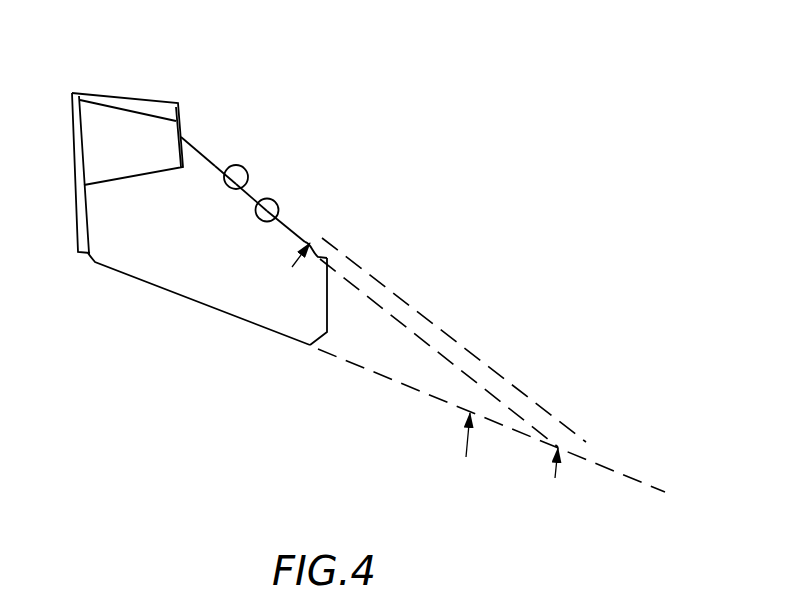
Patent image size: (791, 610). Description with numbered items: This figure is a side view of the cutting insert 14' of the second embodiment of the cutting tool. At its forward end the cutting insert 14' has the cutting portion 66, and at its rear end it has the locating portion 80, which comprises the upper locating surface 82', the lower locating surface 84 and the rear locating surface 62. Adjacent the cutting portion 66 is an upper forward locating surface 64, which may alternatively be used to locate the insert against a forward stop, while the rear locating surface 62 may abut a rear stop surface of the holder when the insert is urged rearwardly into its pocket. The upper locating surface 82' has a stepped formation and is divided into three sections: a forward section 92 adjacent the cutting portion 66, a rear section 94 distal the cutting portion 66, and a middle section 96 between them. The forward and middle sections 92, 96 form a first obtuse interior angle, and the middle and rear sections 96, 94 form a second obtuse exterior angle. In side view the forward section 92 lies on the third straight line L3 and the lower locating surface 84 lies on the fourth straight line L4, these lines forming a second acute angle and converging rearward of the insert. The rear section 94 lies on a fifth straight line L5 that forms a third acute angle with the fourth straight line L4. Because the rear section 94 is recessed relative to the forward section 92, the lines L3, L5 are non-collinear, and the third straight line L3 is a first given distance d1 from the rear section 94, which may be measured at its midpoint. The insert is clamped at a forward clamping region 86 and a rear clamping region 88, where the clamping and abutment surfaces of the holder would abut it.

The cutting insert 14' is at (289, 188).
The cutting portion 66 is at (122, 92).
The upper forward locating surface 64 is at (185, 113).
The forward section 92 is at (200, 142).
The forward clamping region 86 is at (220, 157).
The upper locating surface 82' is at (290, 137).
The middle section 96 is at (258, 190).
The rear section 94 is at (287, 216).
The rear clamping region 88 is at (297, 222).
The first given distance d1 is at (314, 232).
The locating portion 80 is at (375, 250).
The rear locating surface 62 is at (328, 297).
The lower locating surface 84 is at (233, 320).
The third straight line L3 is at (418, 312).
The fifth straight line L5 is at (458, 367).
The fourth straight line L4 is at (438, 403).